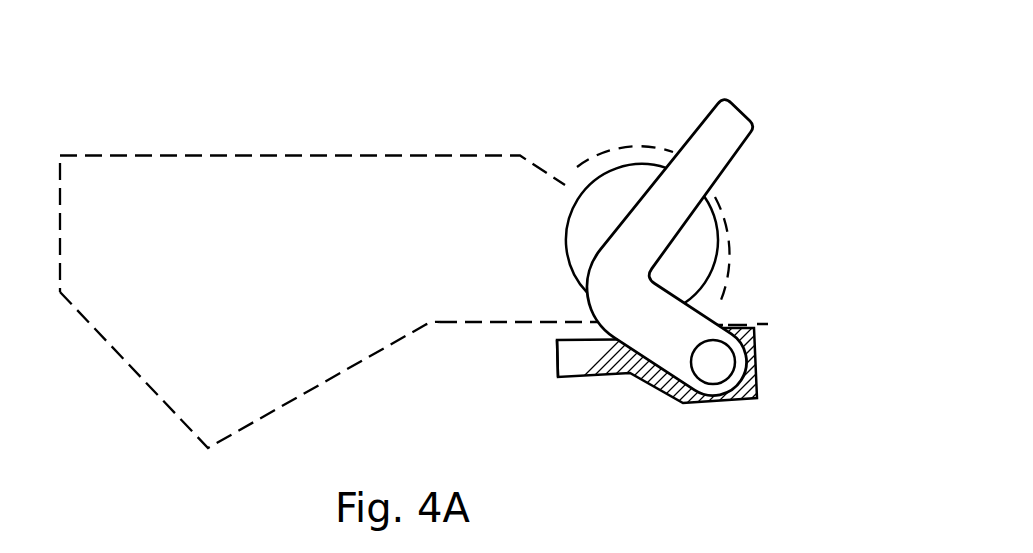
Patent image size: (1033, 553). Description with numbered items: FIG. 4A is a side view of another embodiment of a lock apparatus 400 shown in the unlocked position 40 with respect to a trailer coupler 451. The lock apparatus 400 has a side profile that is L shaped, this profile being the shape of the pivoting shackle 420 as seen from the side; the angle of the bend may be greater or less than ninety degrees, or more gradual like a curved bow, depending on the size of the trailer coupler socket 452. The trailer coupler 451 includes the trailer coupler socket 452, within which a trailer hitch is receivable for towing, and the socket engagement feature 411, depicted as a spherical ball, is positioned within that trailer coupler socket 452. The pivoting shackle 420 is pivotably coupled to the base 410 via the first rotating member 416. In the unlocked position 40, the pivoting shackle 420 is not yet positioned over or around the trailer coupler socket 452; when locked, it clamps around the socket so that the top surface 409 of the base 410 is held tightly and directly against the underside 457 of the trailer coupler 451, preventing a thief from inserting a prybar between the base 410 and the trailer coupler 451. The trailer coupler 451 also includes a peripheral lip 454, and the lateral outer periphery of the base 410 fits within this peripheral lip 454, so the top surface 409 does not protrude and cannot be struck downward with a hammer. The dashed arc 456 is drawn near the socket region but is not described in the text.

The unlocked position 40 is at (143, 71).
The lock apparatus 400 is at (799, 456).
The top surface 409 is at (567, 338).
The base 410 is at (612, 355).
The socket engagement feature 411 is at (585, 190).
The first rotating member 416 is at (715, 377).
The pivoting shackle 420 is at (720, 151).
The trailer coupler 451 is at (383, 325).
The trailer coupler socket 452 is at (726, 247).
The peripheral lip 454 is at (733, 317).
The upper clearance arc 456 is at (640, 143).
The underside 457 is at (494, 323).